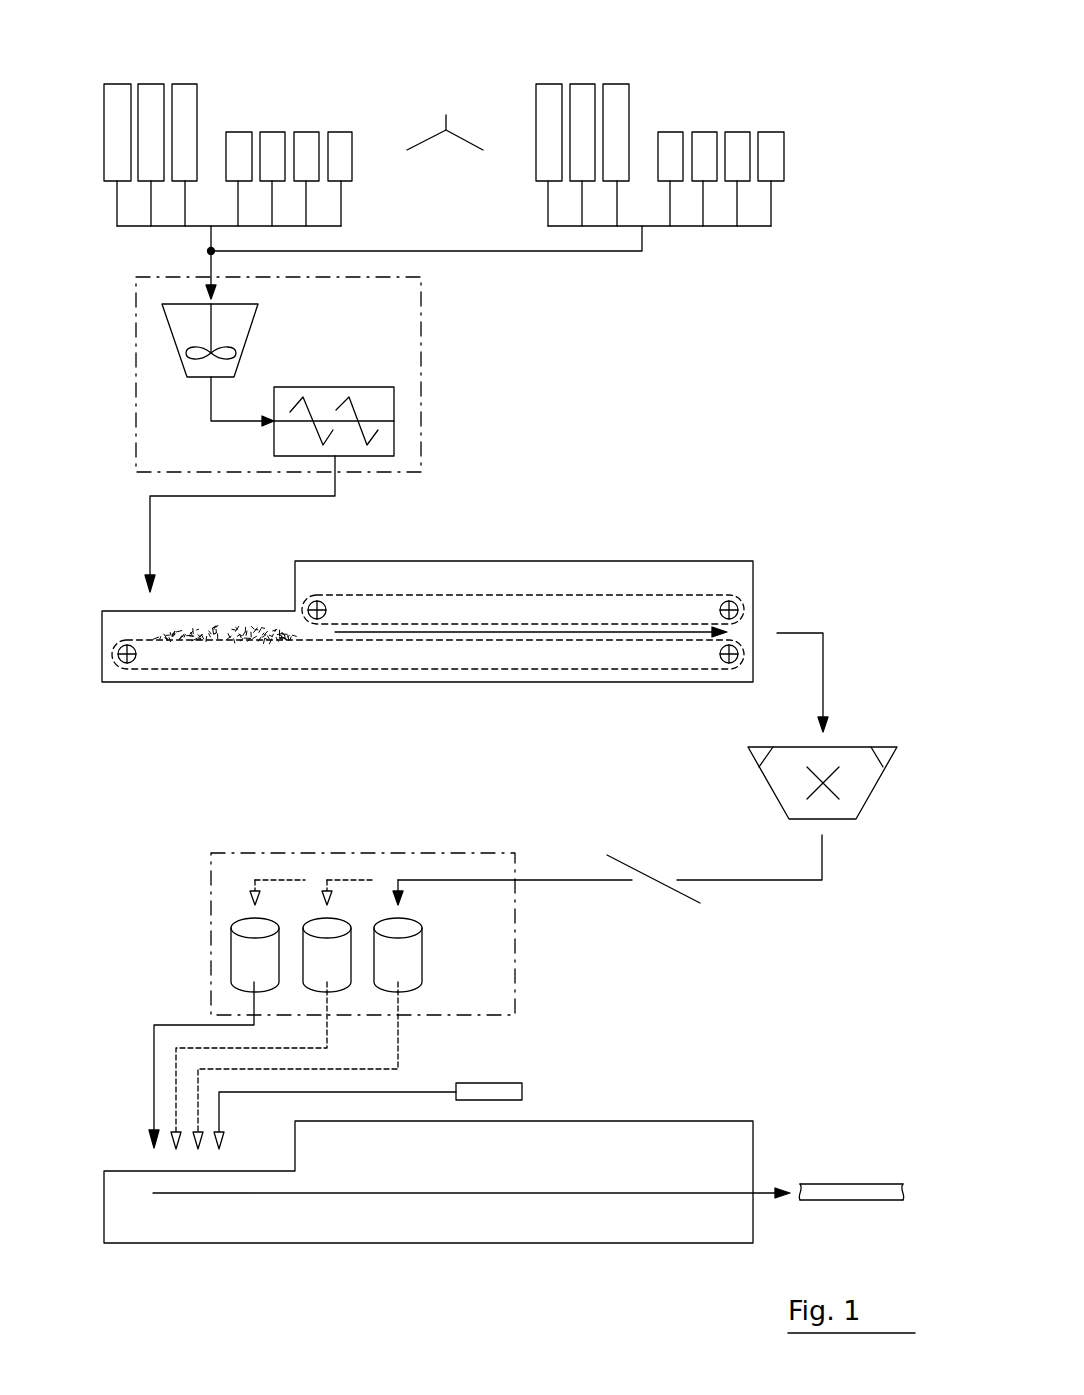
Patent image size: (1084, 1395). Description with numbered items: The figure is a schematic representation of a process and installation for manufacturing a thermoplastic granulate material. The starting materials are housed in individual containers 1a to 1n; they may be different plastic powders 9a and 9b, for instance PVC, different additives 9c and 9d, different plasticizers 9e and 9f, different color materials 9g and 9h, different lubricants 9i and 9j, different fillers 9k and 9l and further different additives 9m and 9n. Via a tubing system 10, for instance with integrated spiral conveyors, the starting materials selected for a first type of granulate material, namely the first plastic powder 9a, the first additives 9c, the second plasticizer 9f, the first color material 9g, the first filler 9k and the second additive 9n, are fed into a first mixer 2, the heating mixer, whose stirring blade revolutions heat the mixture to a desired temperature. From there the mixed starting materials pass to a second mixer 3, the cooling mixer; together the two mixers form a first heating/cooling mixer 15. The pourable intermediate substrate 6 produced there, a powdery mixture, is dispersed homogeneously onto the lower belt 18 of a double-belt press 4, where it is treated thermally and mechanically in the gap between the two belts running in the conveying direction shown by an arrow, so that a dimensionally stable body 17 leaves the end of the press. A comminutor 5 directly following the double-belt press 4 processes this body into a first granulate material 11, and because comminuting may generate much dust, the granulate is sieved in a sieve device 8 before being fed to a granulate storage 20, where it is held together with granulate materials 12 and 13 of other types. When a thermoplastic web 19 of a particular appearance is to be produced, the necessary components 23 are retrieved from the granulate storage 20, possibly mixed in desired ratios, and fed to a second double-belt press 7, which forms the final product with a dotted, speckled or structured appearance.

The container 1a is at (421, 127).
The container 1n is at (471, 127).
The first mixer 2 is at (239, 325).
The second mixer 3 is at (363, 400).
The double-belt press 4 is at (551, 561).
The comminutor 5 is at (760, 788).
The intermediate substrate 6 is at (158, 633).
The further double-belt press 7 is at (681, 1121).
The sieve device 8 is at (655, 883).
The first plastic powder 9a is at (118, 92).
The second plastic powder 9b is at (548, 97).
The first additives 9c is at (152, 92).
The second additives 9d is at (587, 97).
The first plasticizer 9e is at (185, 92).
The second plasticizer 9f is at (617, 97).
The first color materials 9g is at (238, 140).
The second color materials 9h is at (672, 140).
The first lubricant 9i is at (271, 140).
The second lubricant 9j is at (702, 140).
The first fillers 9k is at (306, 140).
The second fillers 9l is at (737, 140).
The first additives 9m is at (341, 140).
The second additives 9n is at (772, 140).
The tubing system 10 is at (133, 227).
The first granulate material 11 is at (227, 1014).
The second granulate material 12 is at (272, 1014).
The third granulate material 13 is at (354, 1014).
The first heating/cooling mixer 15 is at (135, 348).
The first intermediate product 17 is at (797, 632).
The lower belt 18 is at (165, 670).
The thermoplastic web 19 is at (860, 1184).
The granulate storage 20 is at (211, 940).
The component 23 is at (508, 1091).